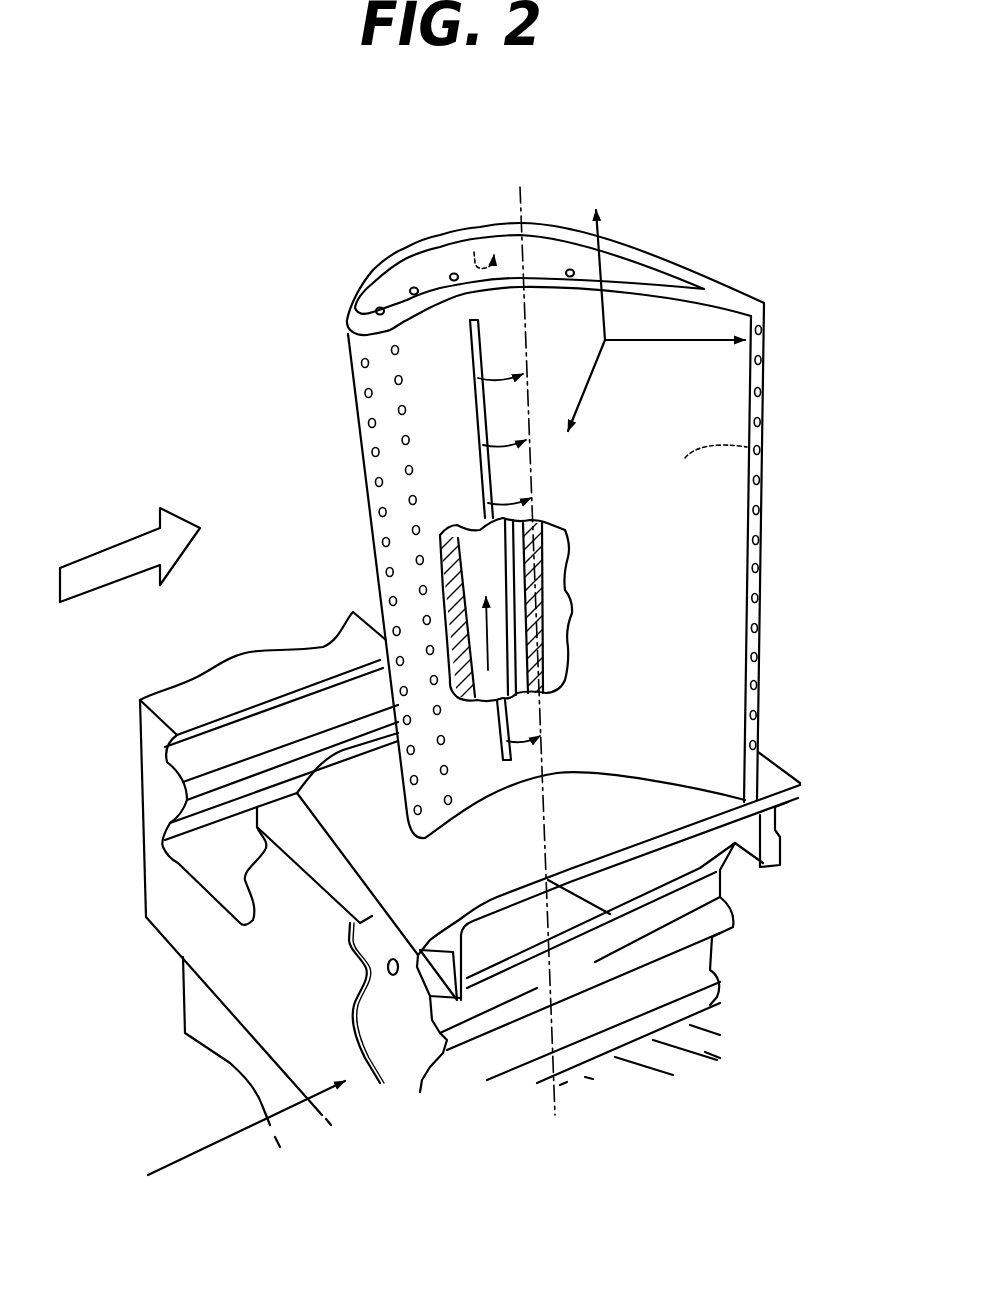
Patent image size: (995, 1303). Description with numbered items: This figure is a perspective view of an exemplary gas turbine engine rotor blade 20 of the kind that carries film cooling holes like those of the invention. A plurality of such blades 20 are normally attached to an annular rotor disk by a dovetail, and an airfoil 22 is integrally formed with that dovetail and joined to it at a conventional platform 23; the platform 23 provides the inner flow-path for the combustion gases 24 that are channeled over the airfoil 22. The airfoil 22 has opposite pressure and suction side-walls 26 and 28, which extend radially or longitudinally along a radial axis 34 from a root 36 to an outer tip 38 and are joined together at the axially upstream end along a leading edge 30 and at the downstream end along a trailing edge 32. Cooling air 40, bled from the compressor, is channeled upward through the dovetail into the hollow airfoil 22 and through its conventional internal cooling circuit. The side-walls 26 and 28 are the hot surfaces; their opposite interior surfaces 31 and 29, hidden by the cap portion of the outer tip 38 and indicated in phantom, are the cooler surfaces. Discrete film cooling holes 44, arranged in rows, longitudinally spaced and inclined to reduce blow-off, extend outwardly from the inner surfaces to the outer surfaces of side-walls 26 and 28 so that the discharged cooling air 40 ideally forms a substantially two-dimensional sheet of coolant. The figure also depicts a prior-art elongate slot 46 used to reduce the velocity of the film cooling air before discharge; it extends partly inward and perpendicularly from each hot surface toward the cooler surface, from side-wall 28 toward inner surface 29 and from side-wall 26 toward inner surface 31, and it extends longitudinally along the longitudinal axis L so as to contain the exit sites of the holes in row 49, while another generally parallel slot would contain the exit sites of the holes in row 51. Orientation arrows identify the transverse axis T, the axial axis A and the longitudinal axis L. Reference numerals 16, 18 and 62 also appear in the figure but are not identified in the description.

The seal 16 is at (383, 997).
The adjacent platform 18 is at (213, 873).
The rotor blade 20 is at (780, 748).
The airfoil 22 is at (370, 562).
The platform 23 is at (377, 843).
The combustion gases 24 is at (103, 548).
The pressure side-wall 26 is at (725, 513).
The suction side-wall 28 is at (759, 452).
The inner surface 29 is at (474, 252).
The leading edge 30 is at (367, 495).
The inner surface 31 is at (430, 275).
The trailing edge 32 is at (760, 600).
The radial axis 34 is at (523, 202).
The root 36 is at (557, 775).
The outer tip 38 is at (623, 247).
The cooling air 40 is at (490, 638).
The film cooling holes 44 is at (403, 408).
The elongate slot 46 is at (490, 472).
The row of holes 49 is at (421, 823).
The row of holes 51 is at (455, 806).
The tip cooling holes 62 is at (411, 290).
The longitudinal axis L is at (602, 311).
The axial axis A is at (683, 345).
The transverse axis T is at (587, 387).